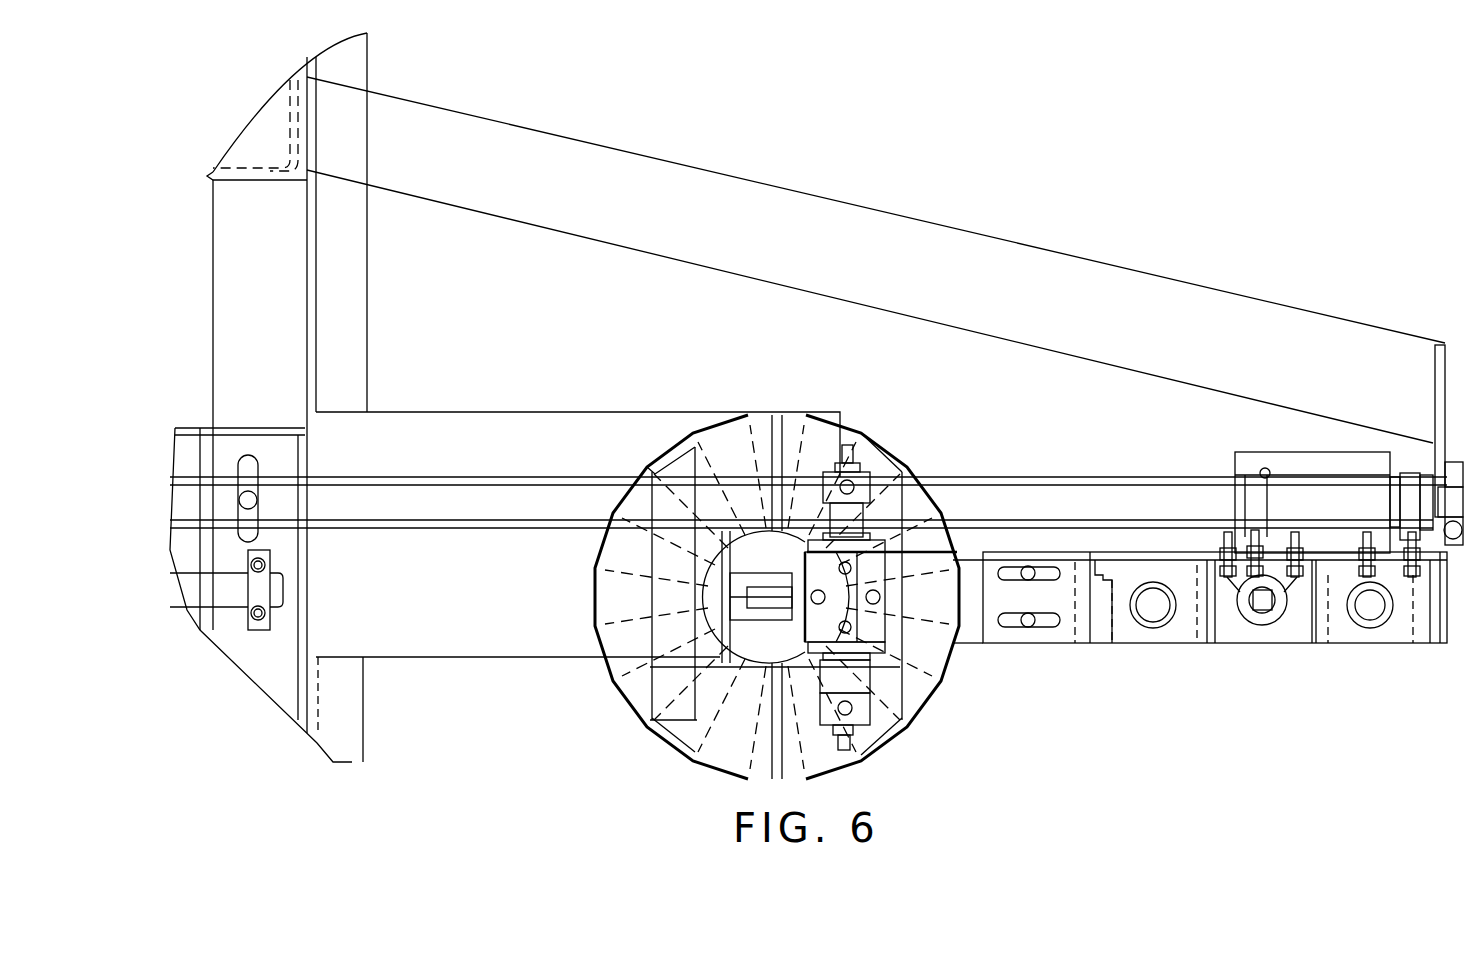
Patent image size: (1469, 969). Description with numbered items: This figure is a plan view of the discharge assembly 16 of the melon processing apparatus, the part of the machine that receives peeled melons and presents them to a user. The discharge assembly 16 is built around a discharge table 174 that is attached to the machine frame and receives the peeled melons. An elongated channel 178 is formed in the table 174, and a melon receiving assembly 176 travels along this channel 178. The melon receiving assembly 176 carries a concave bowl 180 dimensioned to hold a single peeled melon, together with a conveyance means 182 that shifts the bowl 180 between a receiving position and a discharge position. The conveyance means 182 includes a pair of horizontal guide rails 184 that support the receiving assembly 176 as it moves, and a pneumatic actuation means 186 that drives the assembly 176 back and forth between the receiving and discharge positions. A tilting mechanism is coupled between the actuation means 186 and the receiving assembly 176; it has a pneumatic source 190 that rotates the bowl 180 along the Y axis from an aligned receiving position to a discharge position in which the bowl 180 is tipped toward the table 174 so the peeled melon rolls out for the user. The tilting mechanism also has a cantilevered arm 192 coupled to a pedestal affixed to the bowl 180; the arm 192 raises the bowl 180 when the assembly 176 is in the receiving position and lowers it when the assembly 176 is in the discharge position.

The discharge assembly 16 is at (955, 708).
The discharge table 174 is at (1200, 668).
The melon receiving assembly 176 is at (912, 437).
The elongated channel 178 is at (503, 640).
The concave bowl 180 is at (830, 755).
The conveyance means 182 is at (1207, 455).
The horizontal guide rails 184 is at (483, 520).
The pneumatic actuation means 186 is at (1275, 630).
The pneumatic source 190 is at (878, 617).
The cantilevered arm 192 is at (783, 520).